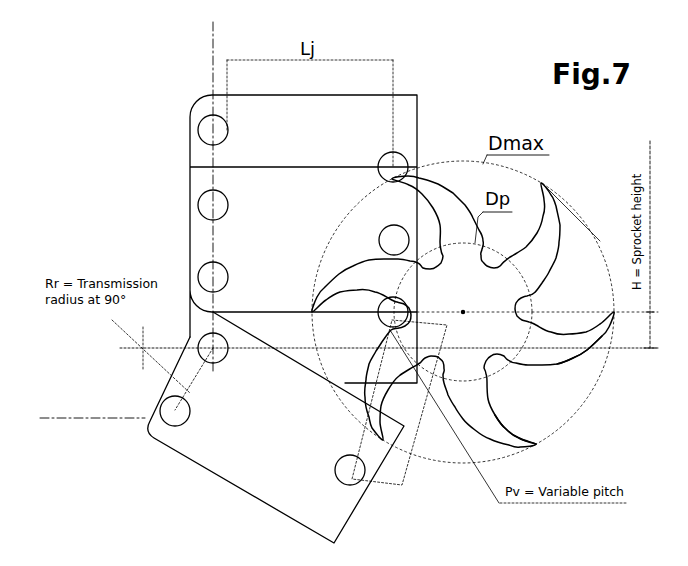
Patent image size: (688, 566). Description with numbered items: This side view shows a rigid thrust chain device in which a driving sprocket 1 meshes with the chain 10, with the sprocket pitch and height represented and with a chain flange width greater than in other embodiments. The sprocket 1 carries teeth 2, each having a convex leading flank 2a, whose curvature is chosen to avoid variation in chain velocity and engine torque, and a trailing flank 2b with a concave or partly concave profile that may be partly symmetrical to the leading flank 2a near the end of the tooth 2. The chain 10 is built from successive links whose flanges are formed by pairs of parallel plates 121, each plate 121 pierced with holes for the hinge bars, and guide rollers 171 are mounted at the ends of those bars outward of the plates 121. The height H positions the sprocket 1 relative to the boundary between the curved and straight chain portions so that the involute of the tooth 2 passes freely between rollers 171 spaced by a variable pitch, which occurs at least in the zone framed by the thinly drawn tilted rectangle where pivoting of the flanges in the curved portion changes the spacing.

The sprocket 1 is at (565, 221).
The tooth 2 is at (537, 340).
The leading flank 2a is at (589, 394).
The trailing flank 2b is at (512, 420).
The chain 10 is at (421, 86).
The plate 121 is at (324, 136).
The roller 171 is at (197, 132).